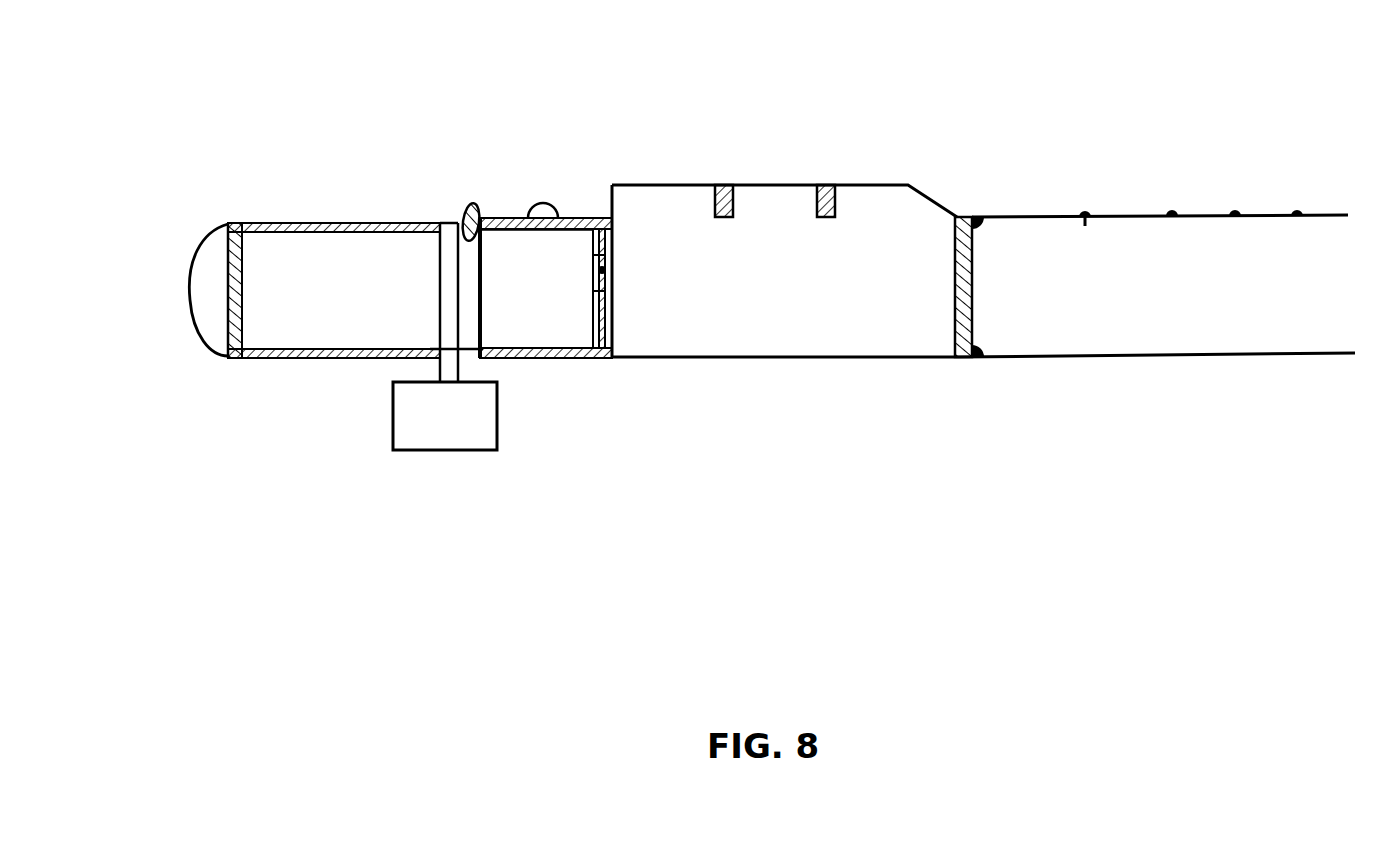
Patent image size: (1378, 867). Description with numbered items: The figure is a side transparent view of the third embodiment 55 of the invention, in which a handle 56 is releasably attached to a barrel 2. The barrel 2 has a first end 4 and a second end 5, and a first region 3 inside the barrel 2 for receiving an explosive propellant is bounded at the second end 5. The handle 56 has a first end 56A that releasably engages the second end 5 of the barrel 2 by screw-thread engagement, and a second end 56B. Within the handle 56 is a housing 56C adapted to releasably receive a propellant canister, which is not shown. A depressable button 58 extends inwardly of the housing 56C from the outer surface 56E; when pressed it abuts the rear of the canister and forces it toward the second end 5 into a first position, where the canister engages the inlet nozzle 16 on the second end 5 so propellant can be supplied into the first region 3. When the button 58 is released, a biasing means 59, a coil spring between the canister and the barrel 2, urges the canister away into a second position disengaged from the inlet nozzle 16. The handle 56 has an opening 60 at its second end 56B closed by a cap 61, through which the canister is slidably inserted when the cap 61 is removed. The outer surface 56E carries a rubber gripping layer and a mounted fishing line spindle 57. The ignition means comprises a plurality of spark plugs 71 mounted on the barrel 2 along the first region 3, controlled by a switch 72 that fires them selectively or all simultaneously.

The barrel 2 is at (848, 357).
The first region 3 is at (762, 323).
The first end 4 is at (955, 360).
The second end 5 is at (613, 310).
The inlet nozzle 16 is at (610, 265).
The probe assembly 55 is at (432, 555).
The handle 56 is at (335, 205).
The first end 56A is at (592, 202).
The second end 56B is at (243, 210).
The housing 56C is at (365, 318).
The outer surface 56E is at (278, 222).
The fishing line spindle 57 is at (481, 430).
The depressable button 58 is at (476, 197).
The biasing means 59 is at (600, 345).
The opening 60 is at (228, 352).
The cap 61 is at (205, 290).
The spark plugs 71 is at (738, 185).
The switch/actuator 72 is at (553, 198).